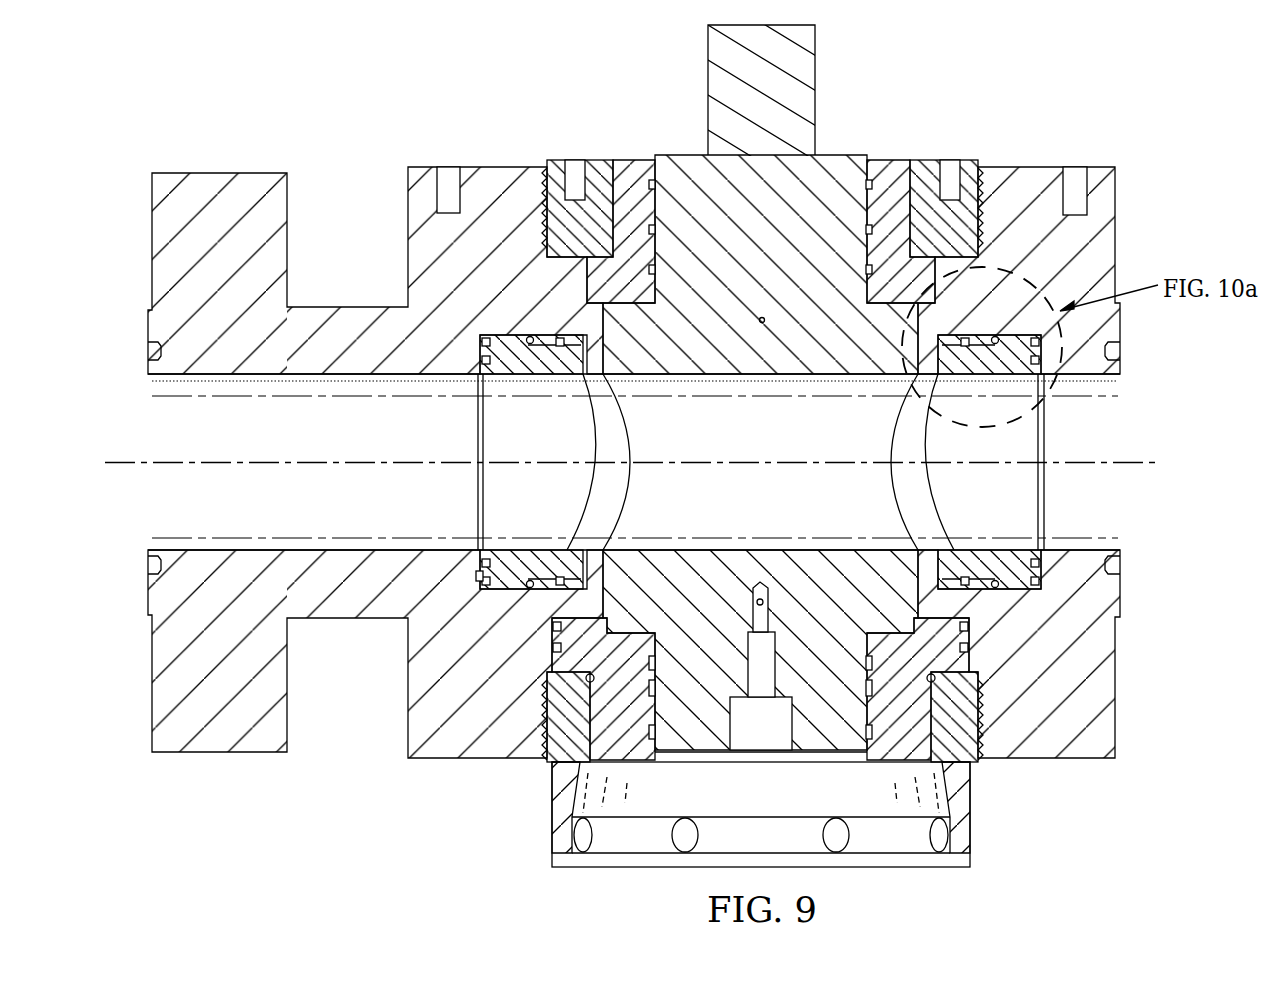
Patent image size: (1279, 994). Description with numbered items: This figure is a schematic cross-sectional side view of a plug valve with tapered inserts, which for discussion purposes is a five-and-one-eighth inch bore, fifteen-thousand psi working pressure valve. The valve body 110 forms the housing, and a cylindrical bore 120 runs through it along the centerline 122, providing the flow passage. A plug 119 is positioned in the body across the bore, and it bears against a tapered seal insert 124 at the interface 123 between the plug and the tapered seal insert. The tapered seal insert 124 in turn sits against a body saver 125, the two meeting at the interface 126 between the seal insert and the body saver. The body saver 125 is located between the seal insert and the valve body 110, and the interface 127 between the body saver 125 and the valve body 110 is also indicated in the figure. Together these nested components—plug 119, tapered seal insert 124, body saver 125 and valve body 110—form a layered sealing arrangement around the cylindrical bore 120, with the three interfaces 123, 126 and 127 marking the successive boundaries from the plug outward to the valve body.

The valve body 110 is at (160, 232).
The plug 119 is at (722, 78).
The cylindrical bore 120 is at (168, 500).
The centerline 122 is at (1145, 462).
The interface between plug and tapered seal insert 123 is at (628, 443).
The tapered seal insert 124 is at (583, 555).
The body saver 125 is at (517, 363).
The interface between seal insert and body saver 126 is at (580, 510).
The interface between body saver and valve body 127 is at (488, 577).